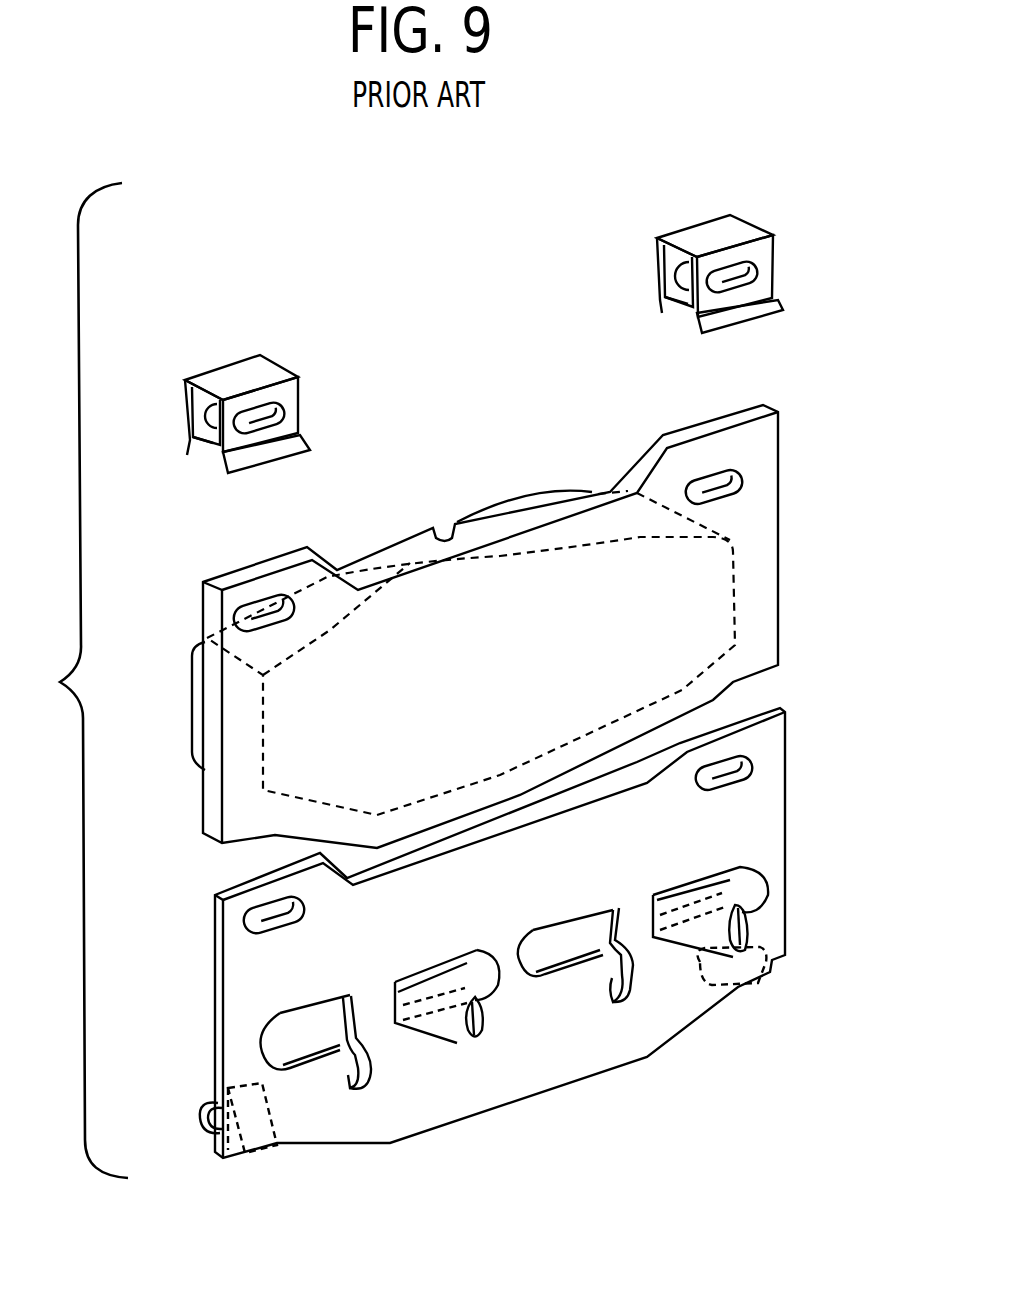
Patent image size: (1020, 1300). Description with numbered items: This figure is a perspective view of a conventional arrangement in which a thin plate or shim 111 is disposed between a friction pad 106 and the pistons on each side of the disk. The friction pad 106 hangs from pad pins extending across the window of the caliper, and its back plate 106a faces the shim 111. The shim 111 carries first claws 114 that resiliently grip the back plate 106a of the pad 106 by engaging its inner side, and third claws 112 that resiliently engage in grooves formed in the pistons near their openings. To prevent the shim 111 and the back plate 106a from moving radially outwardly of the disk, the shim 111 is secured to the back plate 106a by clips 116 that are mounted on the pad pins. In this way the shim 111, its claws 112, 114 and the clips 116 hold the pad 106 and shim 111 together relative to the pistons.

The friction pad 106 is at (786, 515).
The back plate 106a is at (760, 612).
The shim 111 is at (805, 846).
The third claws 112 is at (352, 1088).
The first claws 114 is at (205, 1135).
The clips 116 is at (740, 232).